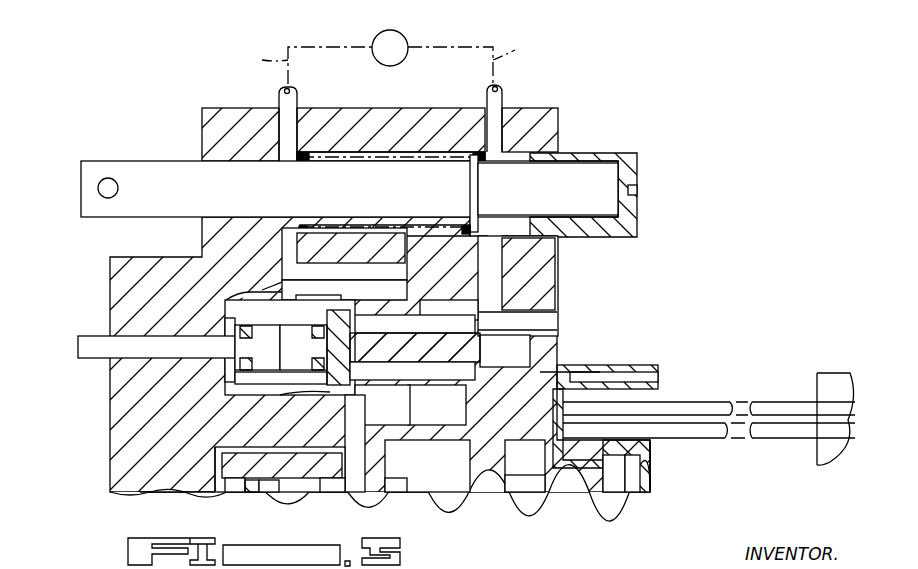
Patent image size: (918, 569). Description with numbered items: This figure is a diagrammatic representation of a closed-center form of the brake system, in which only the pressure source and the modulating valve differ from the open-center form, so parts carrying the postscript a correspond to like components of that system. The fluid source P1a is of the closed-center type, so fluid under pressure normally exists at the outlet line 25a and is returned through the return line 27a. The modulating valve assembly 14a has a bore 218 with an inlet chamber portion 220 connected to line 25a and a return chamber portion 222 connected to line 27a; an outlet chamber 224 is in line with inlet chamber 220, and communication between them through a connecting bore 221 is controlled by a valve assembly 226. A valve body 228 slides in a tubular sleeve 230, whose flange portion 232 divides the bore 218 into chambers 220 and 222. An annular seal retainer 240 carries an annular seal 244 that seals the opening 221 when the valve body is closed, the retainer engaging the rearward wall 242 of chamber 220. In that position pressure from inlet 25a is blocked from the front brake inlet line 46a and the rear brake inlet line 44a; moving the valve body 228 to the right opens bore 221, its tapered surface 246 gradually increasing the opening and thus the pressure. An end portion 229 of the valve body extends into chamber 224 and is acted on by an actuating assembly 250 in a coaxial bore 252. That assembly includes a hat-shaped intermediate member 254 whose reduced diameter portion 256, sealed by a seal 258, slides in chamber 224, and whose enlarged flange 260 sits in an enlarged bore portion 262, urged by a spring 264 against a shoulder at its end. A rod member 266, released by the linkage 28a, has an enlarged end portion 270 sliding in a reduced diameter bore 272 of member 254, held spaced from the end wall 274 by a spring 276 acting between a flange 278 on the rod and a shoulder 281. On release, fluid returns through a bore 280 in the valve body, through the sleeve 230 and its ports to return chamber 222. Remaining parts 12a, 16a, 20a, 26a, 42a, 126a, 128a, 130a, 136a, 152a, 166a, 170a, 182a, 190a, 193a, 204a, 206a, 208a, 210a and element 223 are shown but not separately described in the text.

The fluid source P1a is at (372, 44).
The outlet line 25a is at (262, 60).
The return line 27a is at (510, 52).
The port fitting 26a is at (279, 96).
The linkage 28a is at (502, 96).
The cylinder block 190a is at (307, 168).
The cylinder bore 204a is at (406, 156).
The cylinder end block 206a is at (599, 153).
The cylinder assembly 12a is at (650, 152).
The rod eye 193a is at (109, 178).
The intermediate member 254 is at (291, 258).
The piston chamber 208a is at (452, 162).
The piston 210a is at (482, 190).
The outlet chamber 224 is at (488, 458).
The enlarged portion of bore 262 is at (276, 282).
The spring 264 is at (344, 254).
The seal 258 is at (344, 267).
The connecting bore 221 is at (473, 300).
The bore 218 is at (476, 329).
The actuating assembly 250 is at (236, 292).
The annular seal retainer 240 is at (449, 288).
The reduced diameter portion 256 is at (325, 296).
The valve assembly 226 is at (445, 315).
The valve body 228 is at (518, 286).
The return chamber portion 222 is at (557, 306).
The bore 252 is at (228, 305).
The tubular sleeve 230 is at (557, 326).
The modulating valve assembly 14a is at (600, 325).
The rod member 266 is at (76, 336).
The flange 278 is at (225, 325).
The enlarged end portion 270 is at (257, 347).
The shoulder 281 is at (303, 347).
The bore 280 is at (415, 348).
The flange portion 232 is at (553, 360).
The mounting flange 182a is at (640, 365).
The conduit 42a is at (708, 400).
The wall 20a is at (828, 368).
The spring 276 is at (240, 376).
The enlarged flange 260 is at (228, 412).
The reduced diameter bore 272 is at (328, 385).
The end wall 274 is at (355, 380).
The end portion 229 is at (345, 396).
The inlet chamber portion 220 is at (391, 405).
The housing wall 152a is at (215, 464).
The tapered surface 246 is at (280, 469).
The annular seal 244 is at (361, 443).
The passage 223 is at (526, 479).
The rear brake inlet line 44a is at (728, 440).
The fitting 166a is at (655, 488).
The housing 16a is at (655, 504).
The passage 170a is at (635, 492).
The front brake inlet line 46a is at (398, 494).
The base 130a is at (220, 496).
The port 128a is at (265, 514).
The seal 126a is at (262, 490).
The passage 136a is at (268, 494).
The rearward wall 242 is at (350, 494).